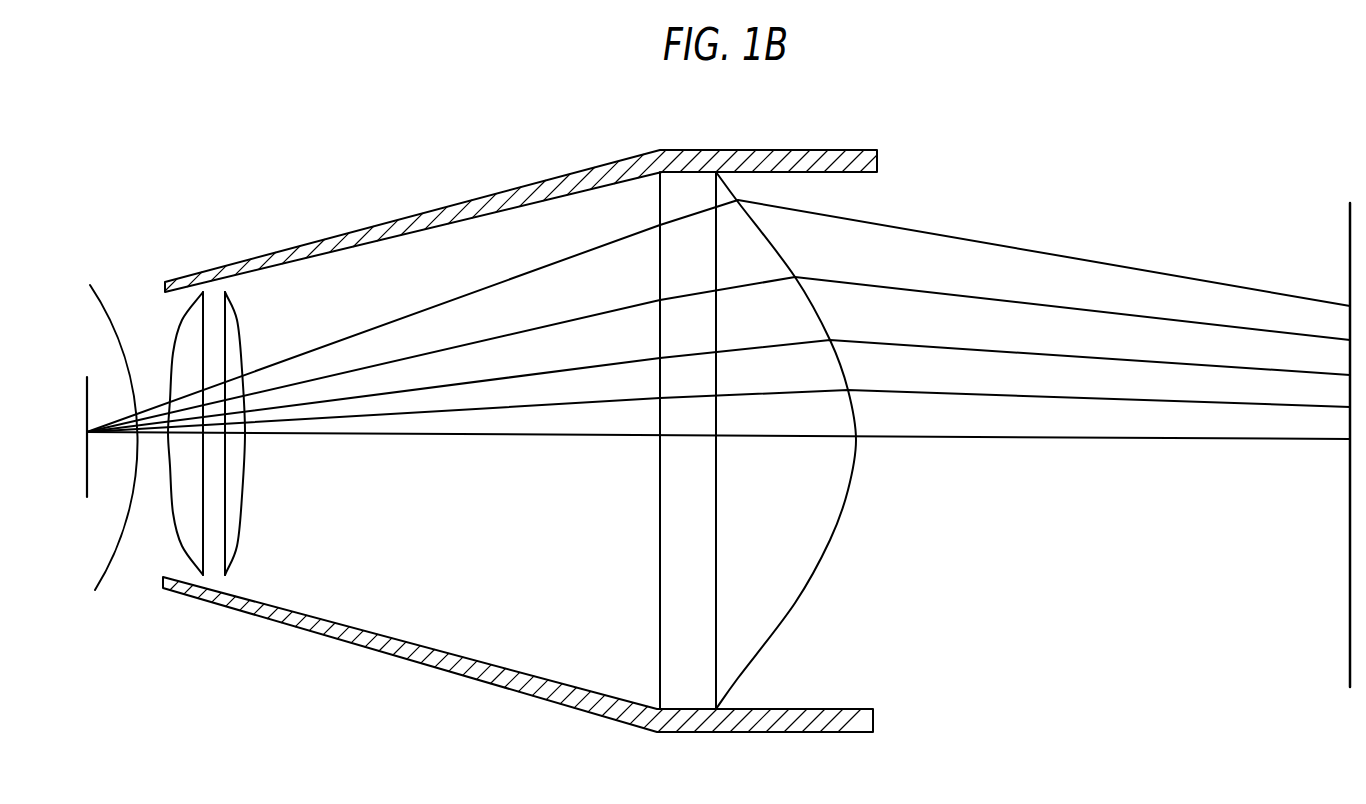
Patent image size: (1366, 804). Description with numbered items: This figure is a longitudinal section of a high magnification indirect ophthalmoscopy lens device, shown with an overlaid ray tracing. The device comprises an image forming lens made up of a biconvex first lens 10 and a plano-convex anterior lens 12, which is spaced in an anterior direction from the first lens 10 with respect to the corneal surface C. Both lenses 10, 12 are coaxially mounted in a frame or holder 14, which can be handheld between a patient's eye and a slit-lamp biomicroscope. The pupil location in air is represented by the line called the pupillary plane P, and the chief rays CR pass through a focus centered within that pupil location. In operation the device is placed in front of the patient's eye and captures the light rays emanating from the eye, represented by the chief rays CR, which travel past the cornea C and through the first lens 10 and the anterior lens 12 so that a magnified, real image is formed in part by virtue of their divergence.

The frame 14 is at (538, 182).
The biconvex first lens 10 is at (233, 503).
The plano-convex anterior lens 12 is at (805, 560).
The cornea C is at (100, 298).
The pupillary plane P is at (88, 393).
The chief rays CR is at (500, 446).